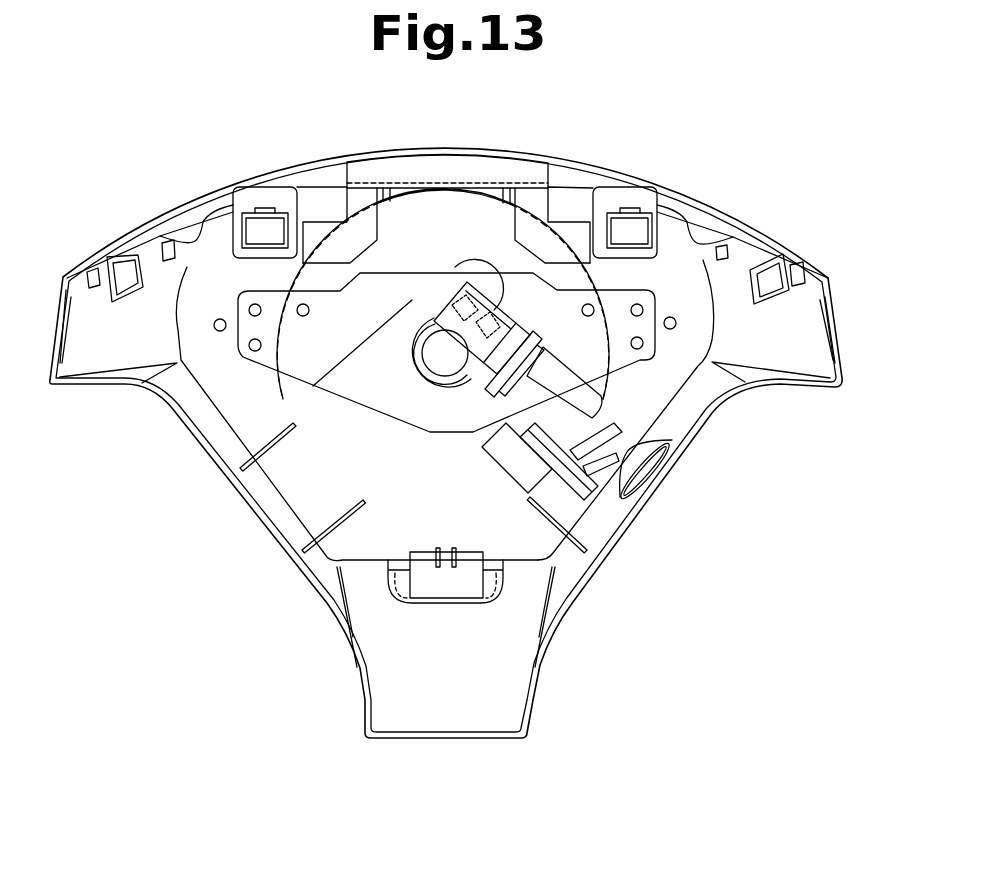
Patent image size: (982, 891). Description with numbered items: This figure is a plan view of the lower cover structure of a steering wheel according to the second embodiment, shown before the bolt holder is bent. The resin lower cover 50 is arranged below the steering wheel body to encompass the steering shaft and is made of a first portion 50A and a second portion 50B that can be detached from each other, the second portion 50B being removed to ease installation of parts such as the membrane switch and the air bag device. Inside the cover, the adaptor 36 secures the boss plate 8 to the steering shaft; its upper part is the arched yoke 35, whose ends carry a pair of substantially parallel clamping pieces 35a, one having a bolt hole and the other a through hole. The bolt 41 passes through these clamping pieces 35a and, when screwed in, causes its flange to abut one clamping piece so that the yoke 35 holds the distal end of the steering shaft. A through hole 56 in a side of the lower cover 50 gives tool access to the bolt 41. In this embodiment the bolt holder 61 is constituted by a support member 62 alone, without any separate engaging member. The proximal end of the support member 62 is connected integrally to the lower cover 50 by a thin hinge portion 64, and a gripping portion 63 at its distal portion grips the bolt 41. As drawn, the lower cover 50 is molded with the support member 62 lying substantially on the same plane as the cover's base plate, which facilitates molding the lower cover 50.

The lower cover 50 is at (808, 175).
The first portion 50A is at (731, 210).
The second portion 50B is at (838, 333).
The boss plate 8 is at (376, 406).
The bolt 41 is at (604, 401).
The yoke 35 is at (397, 312).
The clamping pieces 35a is at (458, 282).
The adaptor 36 is at (404, 368).
The bolt holder 61 is at (463, 470).
The support member 62 is at (512, 475).
The gripping portion 63 is at (486, 444).
The thin hinge portion 64 is at (672, 440).
The through hole 56 is at (650, 477).